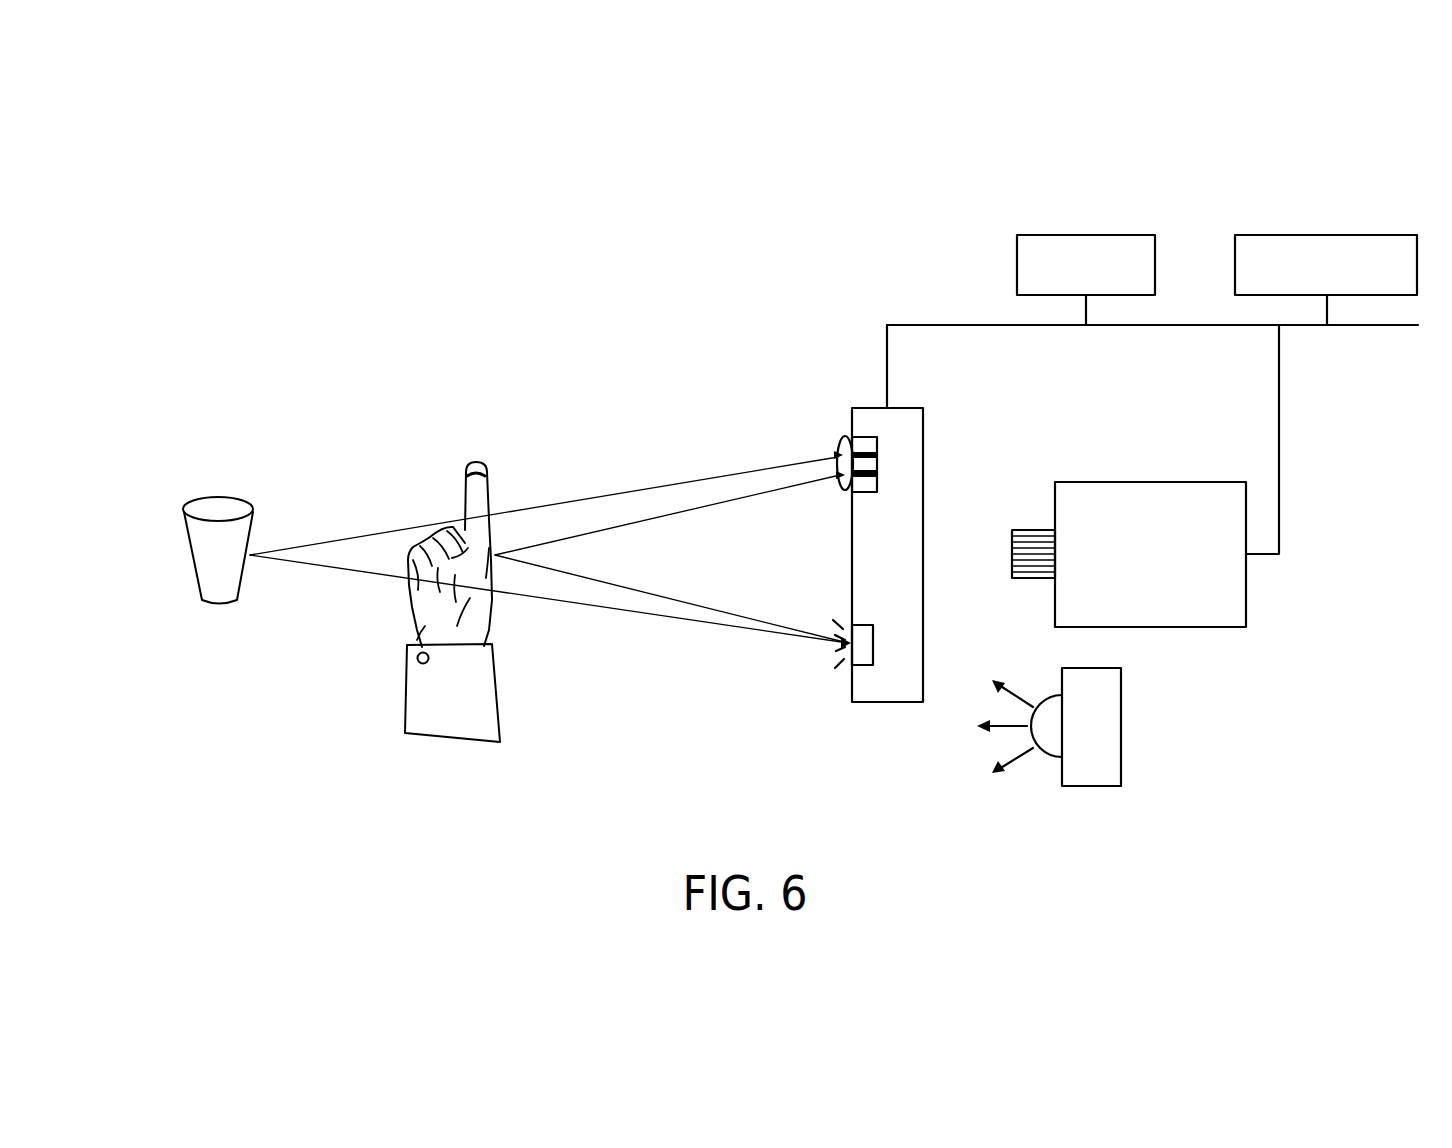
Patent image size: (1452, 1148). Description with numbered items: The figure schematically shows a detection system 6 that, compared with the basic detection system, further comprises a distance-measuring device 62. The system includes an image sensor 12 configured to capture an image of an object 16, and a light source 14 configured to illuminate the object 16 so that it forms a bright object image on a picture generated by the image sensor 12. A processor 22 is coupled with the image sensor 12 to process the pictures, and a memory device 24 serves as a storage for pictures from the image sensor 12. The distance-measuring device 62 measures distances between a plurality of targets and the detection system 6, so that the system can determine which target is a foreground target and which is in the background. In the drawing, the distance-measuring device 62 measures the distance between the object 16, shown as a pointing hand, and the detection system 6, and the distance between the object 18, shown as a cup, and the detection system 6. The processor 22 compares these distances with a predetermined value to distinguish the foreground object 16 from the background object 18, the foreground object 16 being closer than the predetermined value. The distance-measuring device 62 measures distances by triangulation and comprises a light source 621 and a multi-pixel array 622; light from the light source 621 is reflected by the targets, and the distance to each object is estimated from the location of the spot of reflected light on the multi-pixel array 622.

The detection system 6 is at (832, 352).
The image sensor 12 is at (1150, 482).
The light source 14 is at (1121, 725).
The object 16 is at (386, 688).
The object 18 is at (186, 552).
The processor 22 is at (1086, 235).
The memory device 24 is at (1347, 235).
The distance-measuring device 62 is at (830, 551).
The light source 621 is at (862, 655).
The multi-pixel array 622 is at (820, 433).